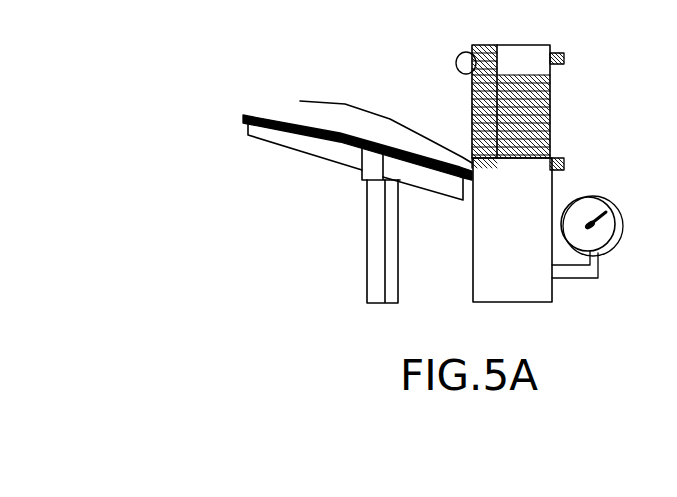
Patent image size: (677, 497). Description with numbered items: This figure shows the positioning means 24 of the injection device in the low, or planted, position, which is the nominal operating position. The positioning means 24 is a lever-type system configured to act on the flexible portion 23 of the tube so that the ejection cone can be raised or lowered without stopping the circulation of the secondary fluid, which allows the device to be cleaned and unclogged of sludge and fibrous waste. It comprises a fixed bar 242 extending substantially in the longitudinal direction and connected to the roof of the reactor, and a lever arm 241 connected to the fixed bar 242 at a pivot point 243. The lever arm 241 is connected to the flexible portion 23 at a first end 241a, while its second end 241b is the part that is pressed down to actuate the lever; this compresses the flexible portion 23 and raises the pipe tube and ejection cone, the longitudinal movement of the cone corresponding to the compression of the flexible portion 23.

The flexible portion 23 is at (472, 97).
The positioning means 24 is at (161, 68).
The lever arm 241 is at (290, 138).
The first end 241a is at (243, 116).
The second end 241b is at (300, 101).
The fixed bar 242 is at (366, 225).
The pivot point 243 is at (362, 172).